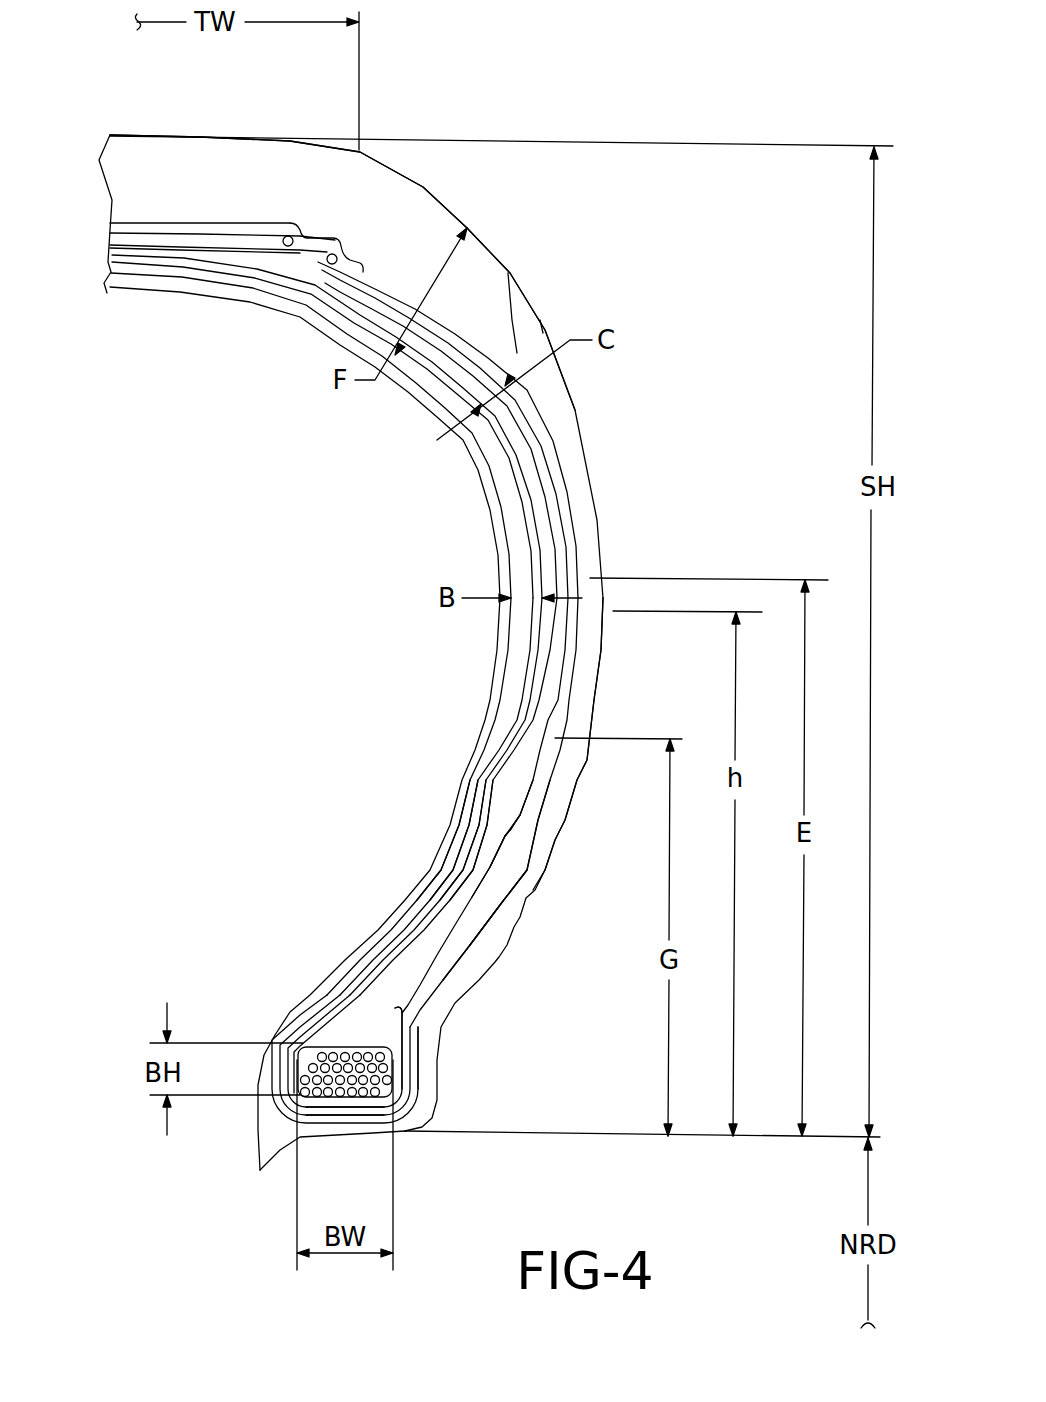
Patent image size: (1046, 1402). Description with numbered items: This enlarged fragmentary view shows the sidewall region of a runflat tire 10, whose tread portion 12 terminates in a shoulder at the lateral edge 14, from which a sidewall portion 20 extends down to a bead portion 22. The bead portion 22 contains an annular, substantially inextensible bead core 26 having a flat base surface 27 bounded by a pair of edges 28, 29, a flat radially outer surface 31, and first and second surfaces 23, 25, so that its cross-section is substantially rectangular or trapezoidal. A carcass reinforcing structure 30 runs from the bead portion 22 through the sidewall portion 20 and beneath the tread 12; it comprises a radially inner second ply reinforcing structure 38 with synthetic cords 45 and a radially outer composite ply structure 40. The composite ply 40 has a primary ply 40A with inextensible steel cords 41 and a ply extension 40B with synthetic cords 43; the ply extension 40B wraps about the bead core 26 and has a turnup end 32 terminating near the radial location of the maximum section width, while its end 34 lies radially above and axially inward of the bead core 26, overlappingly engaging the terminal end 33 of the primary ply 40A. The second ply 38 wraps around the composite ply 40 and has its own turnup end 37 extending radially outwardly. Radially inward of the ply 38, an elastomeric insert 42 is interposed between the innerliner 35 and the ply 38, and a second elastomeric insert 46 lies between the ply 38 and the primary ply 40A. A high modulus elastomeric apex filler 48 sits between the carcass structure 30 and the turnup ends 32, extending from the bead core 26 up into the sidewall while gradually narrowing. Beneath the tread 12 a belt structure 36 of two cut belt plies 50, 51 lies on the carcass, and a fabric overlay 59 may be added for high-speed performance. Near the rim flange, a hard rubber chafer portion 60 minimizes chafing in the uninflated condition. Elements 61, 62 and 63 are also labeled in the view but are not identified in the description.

The tire 10 is at (405, 105).
The tread portion 12 is at (133, 137).
The lateral edge of the tread 14 is at (376, 153).
The sidewall portion 20 is at (603, 645).
The bead portion 22 is at (372, 1007).
The first surface of the bead core 23 is at (298, 1077).
The second surface of the bead core 25 is at (393, 1080).
The bead core 26 is at (345, 1040).
The flat base surface 27 is at (357, 1100).
The edge of the flat base surface 28 is at (297, 1097).
The edge of the flat base surface 29 is at (398, 1092).
The carcass reinforcing structure 30 is at (135, 294).
The flat radially outer surface of the bead core 31 is at (415, 1010).
The turnup end 32 is at (507, 835).
The terminal end of the primary ply 33 is at (322, 1045).
The end of the ply extension 34 is at (427, 900).
The innerliner 35 is at (385, 920).
The tread reinforcing belt structure 36 is at (152, 218).
The turnup end of the second ply reinforcing structure 37 is at (572, 577).
The second ply reinforcing structure 38 is at (522, 495).
The composite ply structure 40 is at (547, 436).
The primary ply 40A is at (548, 470).
The ply extension 40B is at (393, 903).
The inextensible cords 41 is at (560, 550).
The elastomeric insert 42 is at (522, 582).
The synthetic cord 43 is at (457, 897).
The synthetic cords 45 is at (535, 545).
The elastomeric insert 46 is at (543, 533).
The apex filler 48 is at (457, 895).
The belt ply 50 is at (270, 247).
The belt ply 51 is at (267, 257).
The fabric overlay 59 is at (207, 227).
The hard rubber chafer portion 60 is at (465, 965).
The chipper 61 is at (360, 975).
The toe guard 62 is at (370, 945).
The turnup end 63 is at (425, 1030).